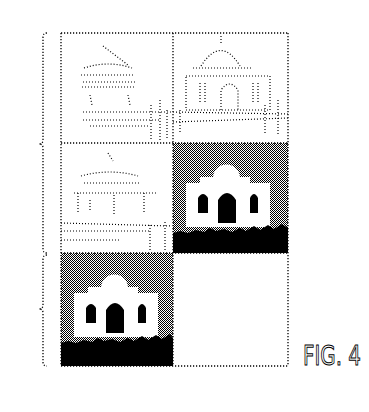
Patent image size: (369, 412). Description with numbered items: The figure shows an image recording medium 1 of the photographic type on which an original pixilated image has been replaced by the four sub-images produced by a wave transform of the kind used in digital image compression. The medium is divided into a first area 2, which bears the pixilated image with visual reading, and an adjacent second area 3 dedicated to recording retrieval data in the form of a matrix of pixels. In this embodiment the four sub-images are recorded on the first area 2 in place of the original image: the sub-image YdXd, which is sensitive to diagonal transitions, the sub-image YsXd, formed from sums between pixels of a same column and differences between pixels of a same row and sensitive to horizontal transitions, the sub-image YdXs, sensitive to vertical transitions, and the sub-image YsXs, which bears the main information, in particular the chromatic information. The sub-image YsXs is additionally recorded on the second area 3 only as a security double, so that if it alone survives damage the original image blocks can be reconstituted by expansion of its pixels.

The image recording medium 1 is at (293, 257).
The first area 2 is at (157, 143).
The second area 3 is at (153, 309).
The sub-image YdXd is at (92, 45).
The sub-image YsXd is at (288, 60).
The sub-image YdXs is at (80, 163).
The sub-image YsXs is at (288, 161).